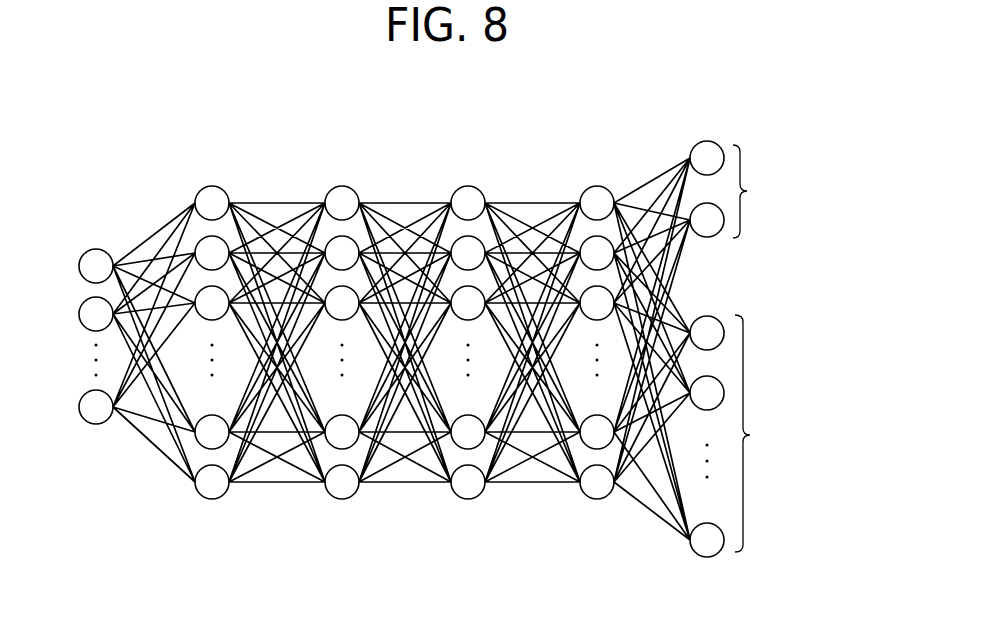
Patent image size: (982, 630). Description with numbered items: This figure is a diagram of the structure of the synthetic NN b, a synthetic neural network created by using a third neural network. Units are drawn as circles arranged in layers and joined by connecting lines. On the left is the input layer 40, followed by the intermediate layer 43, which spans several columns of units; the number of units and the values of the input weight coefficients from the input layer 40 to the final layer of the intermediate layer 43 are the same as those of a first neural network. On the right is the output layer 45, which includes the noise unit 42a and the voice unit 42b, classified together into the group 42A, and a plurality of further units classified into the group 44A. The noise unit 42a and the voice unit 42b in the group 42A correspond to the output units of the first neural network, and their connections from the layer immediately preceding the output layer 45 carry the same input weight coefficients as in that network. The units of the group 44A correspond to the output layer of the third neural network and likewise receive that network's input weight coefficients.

The input layer 40 is at (94, 442).
The intermediate layer 43 is at (402, 518).
The noise unit 42a is at (705, 140).
The voice unit 42b is at (705, 238).
The group 42A is at (769, 191).
The group 44A is at (753, 433).
The output layer 45 is at (707, 572).
The synthetic NN b is at (440, 357).